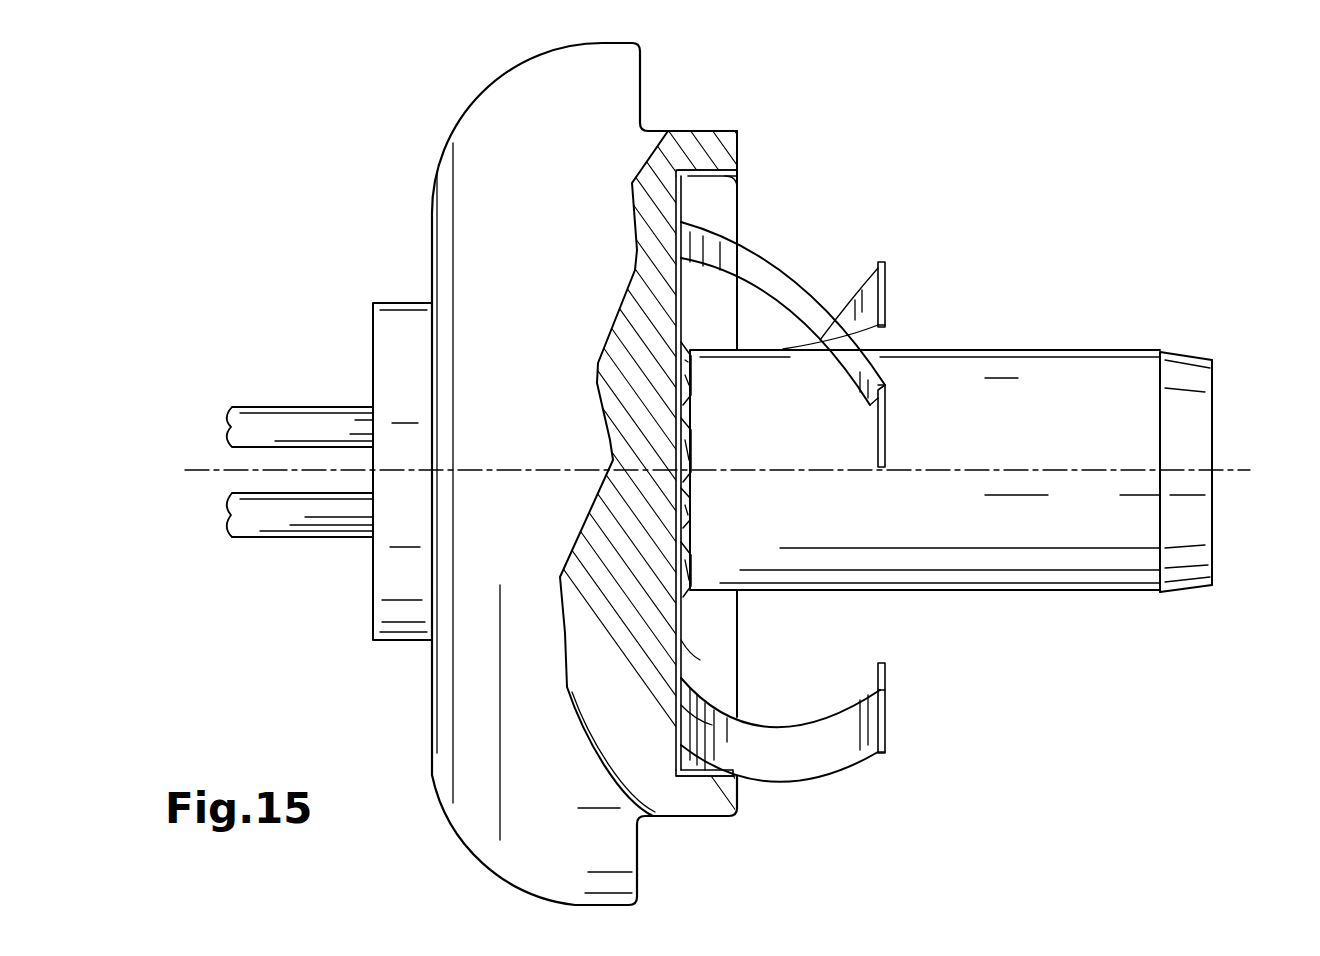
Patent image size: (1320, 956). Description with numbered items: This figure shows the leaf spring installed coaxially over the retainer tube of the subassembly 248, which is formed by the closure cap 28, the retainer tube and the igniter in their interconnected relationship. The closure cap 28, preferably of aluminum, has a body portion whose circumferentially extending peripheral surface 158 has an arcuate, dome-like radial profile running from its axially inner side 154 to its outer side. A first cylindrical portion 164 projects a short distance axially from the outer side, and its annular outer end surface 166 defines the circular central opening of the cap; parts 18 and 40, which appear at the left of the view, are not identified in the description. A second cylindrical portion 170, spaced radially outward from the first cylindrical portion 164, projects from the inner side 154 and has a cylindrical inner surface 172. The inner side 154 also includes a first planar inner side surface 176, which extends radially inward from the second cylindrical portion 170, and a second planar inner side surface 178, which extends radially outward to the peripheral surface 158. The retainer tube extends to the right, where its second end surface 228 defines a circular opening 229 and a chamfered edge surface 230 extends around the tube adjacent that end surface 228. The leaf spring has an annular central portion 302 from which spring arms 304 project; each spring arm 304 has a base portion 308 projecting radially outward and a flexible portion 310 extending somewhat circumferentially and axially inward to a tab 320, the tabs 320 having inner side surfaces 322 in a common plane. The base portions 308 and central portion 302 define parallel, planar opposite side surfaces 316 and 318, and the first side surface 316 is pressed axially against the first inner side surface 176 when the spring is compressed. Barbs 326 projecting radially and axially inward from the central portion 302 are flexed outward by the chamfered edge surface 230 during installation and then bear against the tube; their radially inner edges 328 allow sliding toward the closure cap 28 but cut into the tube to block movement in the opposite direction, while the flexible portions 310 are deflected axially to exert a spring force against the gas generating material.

The conduit 18 is at (200, 470).
The closure cap 28 is at (447, 113).
The tubes 40 is at (265, 510).
The inner side 154 is at (663, 77).
The peripheral surface 158 is at (485, 90).
The first cylindrical portion 164 is at (402, 327).
The annular outer end surface 166 is at (375, 352).
The second cylindrical portion 170 is at (717, 150).
The cylindrical inner surface 172 is at (707, 176).
The first planar inner side surface 176 is at (677, 627).
The second planar inner side surface 178 is at (647, 107).
The second end surface 228 is at (1213, 380).
The circular opening 229 is at (1236, 441).
The chamfered edge surface 230 is at (1198, 358).
The subassembly 248 is at (321, 159).
The central portion 302 is at (664, 312).
The spring arms 304 is at (663, 217).
The base portion 308 is at (683, 712).
The flexible portion 310 is at (755, 253).
The first side surface 316 is at (671, 645).
The second side surface 318 is at (681, 641).
The tab 320 is at (885, 262).
The inner side surface 322 is at (887, 292).
The barb 326 is at (690, 375).
The radially inner edge 328 is at (690, 396).